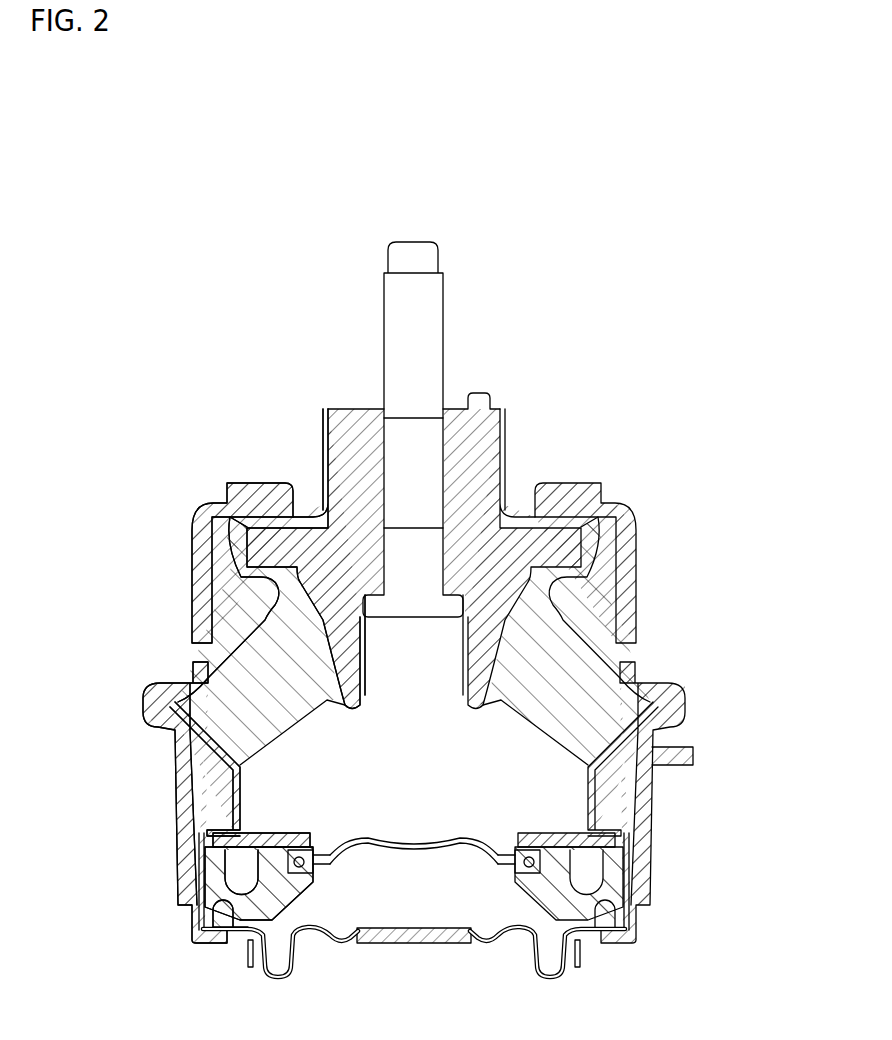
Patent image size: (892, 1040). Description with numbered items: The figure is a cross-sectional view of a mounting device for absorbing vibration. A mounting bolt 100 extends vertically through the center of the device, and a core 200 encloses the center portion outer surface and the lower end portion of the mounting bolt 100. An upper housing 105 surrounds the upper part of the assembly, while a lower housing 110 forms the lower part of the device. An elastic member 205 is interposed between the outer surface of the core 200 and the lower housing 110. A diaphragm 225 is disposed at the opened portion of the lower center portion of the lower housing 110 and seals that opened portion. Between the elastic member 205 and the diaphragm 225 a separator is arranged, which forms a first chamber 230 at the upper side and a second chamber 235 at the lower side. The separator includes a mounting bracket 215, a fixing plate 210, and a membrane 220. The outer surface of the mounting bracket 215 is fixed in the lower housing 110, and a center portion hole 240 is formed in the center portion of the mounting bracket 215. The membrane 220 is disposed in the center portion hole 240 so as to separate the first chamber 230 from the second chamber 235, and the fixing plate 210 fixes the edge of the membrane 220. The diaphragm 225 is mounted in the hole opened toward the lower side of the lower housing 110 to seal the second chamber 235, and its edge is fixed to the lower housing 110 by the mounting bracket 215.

The mounting bolt 100 is at (438, 290).
The upper housing 105 is at (637, 543).
The lower housing 110 is at (648, 800).
The core 200 is at (502, 432).
The elastic member 205 is at (240, 662).
The fixing plate 210 is at (627, 840).
The mounting bracket 215 is at (627, 888).
The membrane 220 is at (418, 858).
The diaphragm 225 is at (454, 937).
The first chamber 230 is at (293, 782).
The second chamber 235 is at (252, 930).
The center portion hole 240 is at (346, 862).